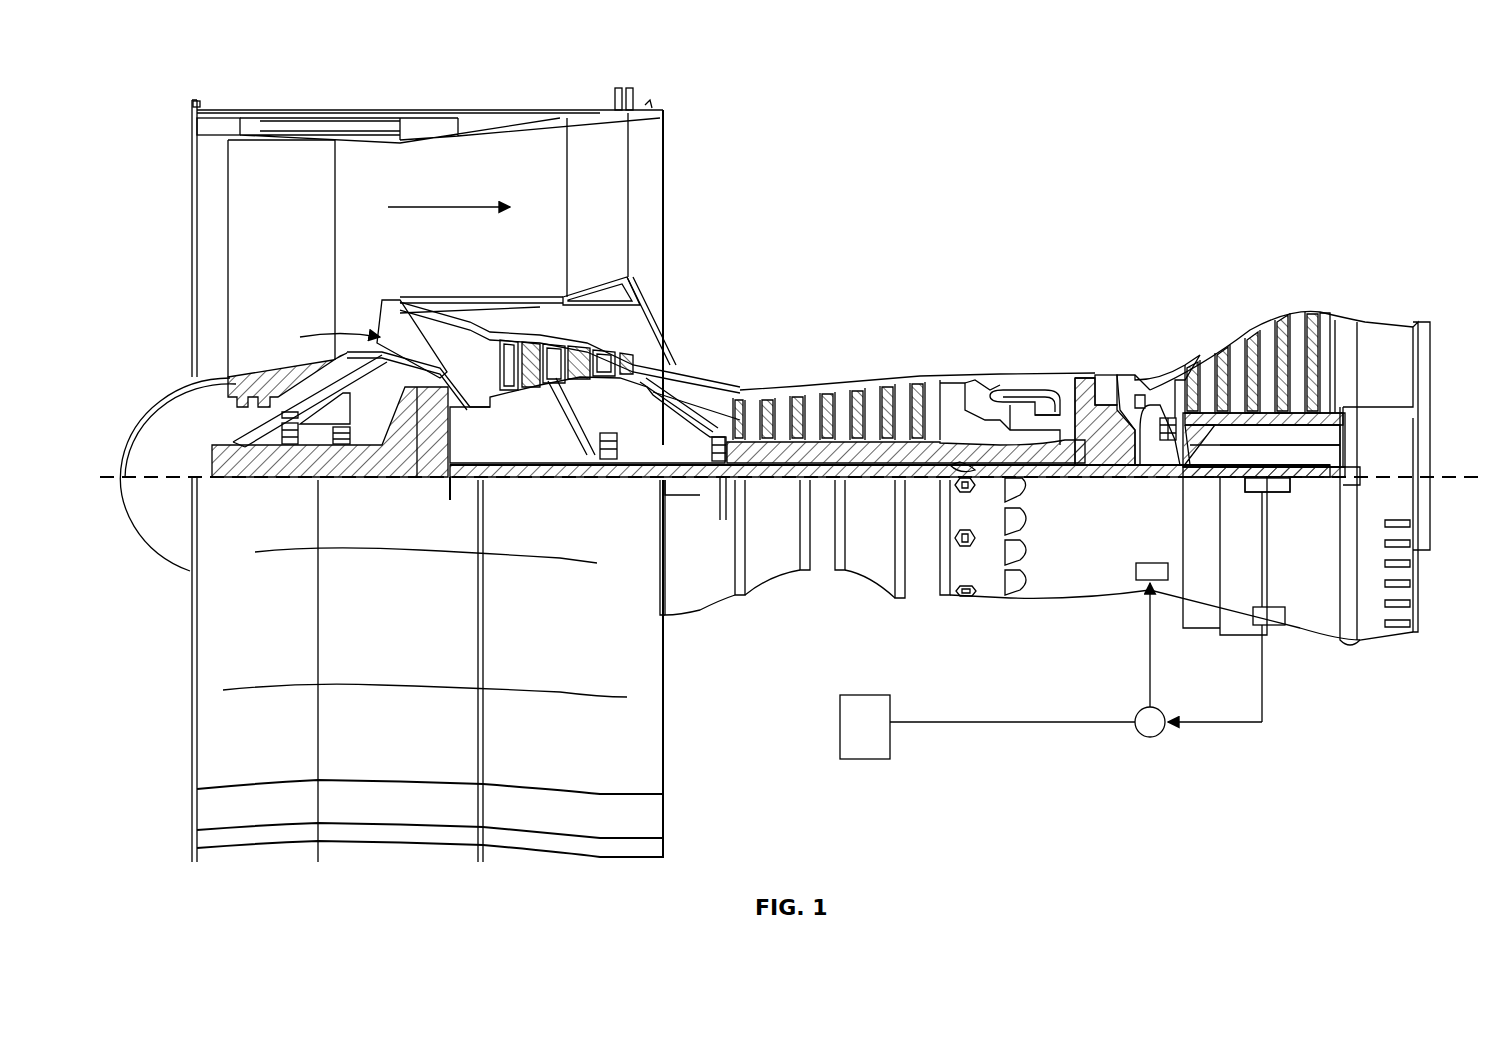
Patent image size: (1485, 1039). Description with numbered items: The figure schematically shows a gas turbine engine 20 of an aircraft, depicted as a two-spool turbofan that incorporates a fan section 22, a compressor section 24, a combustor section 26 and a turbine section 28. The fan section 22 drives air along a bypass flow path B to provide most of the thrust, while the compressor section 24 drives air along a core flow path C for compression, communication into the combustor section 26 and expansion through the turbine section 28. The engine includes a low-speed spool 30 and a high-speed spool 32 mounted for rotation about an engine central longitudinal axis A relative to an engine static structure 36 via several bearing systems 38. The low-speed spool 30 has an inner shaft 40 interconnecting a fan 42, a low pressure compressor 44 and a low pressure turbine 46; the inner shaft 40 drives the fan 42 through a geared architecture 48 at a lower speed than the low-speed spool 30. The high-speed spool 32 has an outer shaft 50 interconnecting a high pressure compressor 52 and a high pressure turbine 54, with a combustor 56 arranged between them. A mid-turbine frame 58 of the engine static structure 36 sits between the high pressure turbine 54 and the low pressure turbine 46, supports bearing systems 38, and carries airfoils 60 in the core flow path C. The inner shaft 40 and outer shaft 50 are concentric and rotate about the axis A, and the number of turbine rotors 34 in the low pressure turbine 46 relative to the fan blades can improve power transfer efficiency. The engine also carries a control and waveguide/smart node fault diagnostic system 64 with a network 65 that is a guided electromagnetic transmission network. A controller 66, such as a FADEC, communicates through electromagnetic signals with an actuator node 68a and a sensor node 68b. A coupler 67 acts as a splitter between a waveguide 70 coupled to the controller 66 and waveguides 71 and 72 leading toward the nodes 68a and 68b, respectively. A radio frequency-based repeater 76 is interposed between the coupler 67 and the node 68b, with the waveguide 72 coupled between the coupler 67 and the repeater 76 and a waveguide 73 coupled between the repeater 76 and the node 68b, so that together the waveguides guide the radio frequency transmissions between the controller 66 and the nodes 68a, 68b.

The gas turbine engine 20 is at (1238, 148).
The fan section 22 is at (462, 98).
The compressor section 24 is at (855, 270).
The combustor section 26 is at (1020, 270).
The turbine section 28 is at (1170, 270).
The low-speed spool 30 is at (890, 483).
The high-speed spool 32 is at (940, 440).
The turbine rotors 34 is at (1335, 428).
The engine static structure 36 is at (925, 598).
The bearing systems 38 is at (292, 442).
The inner shaft 40 is at (680, 480).
The fan 42 is at (281, 258).
The low pressure compressor 44 is at (595, 355).
The low pressure turbine 46 is at (1268, 335).
The geared architecture 48 is at (430, 460).
The outer shaft 50 is at (1052, 455).
The high pressure compressor 52 is at (835, 440).
The high pressure turbine 54 is at (1100, 378).
The combustor 56 is at (1028, 395).
The mid-turbine frame 58 is at (1150, 362).
The airfoils 60 is at (1150, 380).
The control and waveguide/smart node fault diagnostic system 64 is at (1220, 768).
The network 65 is at (1338, 735).
The controller 66 is at (838, 725).
The coupler 67 is at (1150, 738).
The node 68a is at (1135, 568).
The node 68b is at (1289, 600).
The waveguide 70 is at (960, 728).
The waveguide 71 is at (1140, 660).
The waveguide 72 is at (1262, 710).
The waveguide 73 is at (1265, 568).
The radio frequency-based repeater 76 is at (1275, 625).
The engine central longitudinal axis A is at (1440, 477).
The bypass flow path B is at (453, 207).
The core flow path C is at (310, 335).